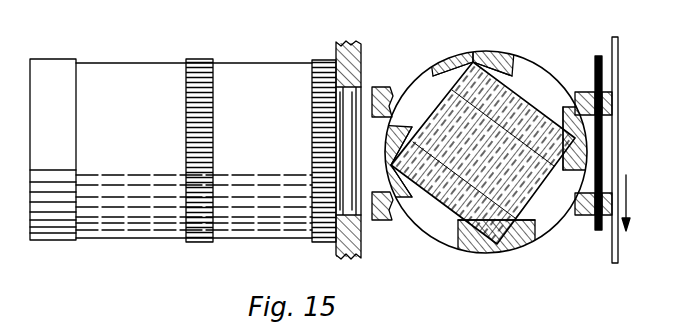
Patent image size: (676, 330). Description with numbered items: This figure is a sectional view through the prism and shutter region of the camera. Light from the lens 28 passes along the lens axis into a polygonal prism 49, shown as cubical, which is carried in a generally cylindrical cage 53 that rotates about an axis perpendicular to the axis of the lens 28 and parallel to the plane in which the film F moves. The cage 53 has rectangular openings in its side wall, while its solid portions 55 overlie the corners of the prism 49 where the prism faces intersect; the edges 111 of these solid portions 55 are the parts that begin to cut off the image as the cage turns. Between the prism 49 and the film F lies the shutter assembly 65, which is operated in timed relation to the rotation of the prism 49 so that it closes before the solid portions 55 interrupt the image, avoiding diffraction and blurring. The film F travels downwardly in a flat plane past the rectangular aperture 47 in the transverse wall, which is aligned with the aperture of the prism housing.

The lens 28 is at (127, 76).
The edges of solid portions 111 is at (399, 112).
The cage 53 is at (457, 52).
The solid portions of the cage 55 is at (470, 73).
The polygonal prism 49 is at (510, 92).
The shutter assembly 65 is at (595, 63).
The rectangular aperture 47 is at (614, 118).
The film F is at (618, 153).